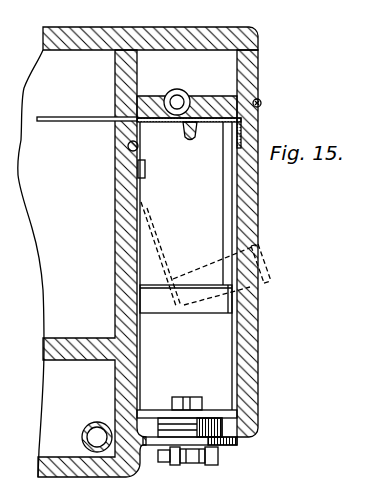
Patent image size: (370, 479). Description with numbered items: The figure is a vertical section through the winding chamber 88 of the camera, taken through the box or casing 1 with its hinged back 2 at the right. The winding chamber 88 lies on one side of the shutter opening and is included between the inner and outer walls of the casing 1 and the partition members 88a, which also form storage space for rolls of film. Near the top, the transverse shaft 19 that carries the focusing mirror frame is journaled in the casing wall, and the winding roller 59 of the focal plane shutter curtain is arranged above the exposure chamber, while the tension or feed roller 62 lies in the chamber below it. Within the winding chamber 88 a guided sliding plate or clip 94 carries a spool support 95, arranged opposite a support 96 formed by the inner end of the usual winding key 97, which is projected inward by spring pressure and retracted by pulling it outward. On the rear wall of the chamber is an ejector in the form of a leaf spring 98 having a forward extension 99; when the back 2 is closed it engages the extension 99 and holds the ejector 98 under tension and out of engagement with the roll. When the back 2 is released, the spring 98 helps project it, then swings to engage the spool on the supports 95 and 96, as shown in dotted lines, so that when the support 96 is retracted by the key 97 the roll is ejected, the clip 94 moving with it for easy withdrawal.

The box or casing 1 is at (252, 67).
The back 2 is at (247, 342).
The shaft 19 is at (129, 147).
The winding roller 59 is at (180, 92).
The tension or feed roller 62 is at (91, 426).
The winding chamber 88 is at (186, 266).
The partition members 88a is at (126, 252).
The sliding plate or clip 94 is at (211, 123).
The spool support 95 is at (189, 136).
The support 96 is at (185, 408).
The winding key 97 is at (220, 457).
The leaf spring 98 is at (142, 262).
The forward extension 99 is at (208, 306).